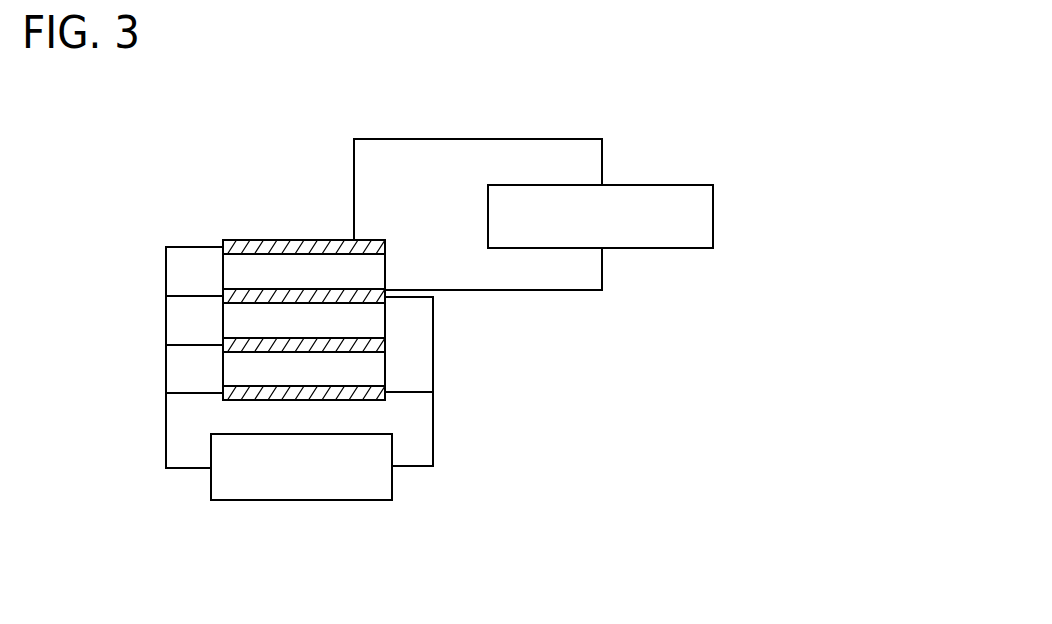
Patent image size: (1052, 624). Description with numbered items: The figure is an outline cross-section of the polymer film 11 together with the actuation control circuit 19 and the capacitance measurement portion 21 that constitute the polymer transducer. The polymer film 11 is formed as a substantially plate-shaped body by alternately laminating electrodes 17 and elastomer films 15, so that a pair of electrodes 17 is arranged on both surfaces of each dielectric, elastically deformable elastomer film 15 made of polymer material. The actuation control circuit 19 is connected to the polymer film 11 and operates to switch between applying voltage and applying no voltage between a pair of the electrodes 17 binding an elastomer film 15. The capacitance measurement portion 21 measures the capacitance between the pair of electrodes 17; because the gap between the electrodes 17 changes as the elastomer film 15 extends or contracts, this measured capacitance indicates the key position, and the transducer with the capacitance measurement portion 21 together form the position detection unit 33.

The polymer film 11 is at (221, 239).
The elastomer film 15 is at (385, 269).
The electrode 17 is at (367, 240).
The actuation control circuit 19 is at (300, 500).
The capacitance measurement portion 21 is at (670, 185).
The position detection unit 33 is at (480, 114).